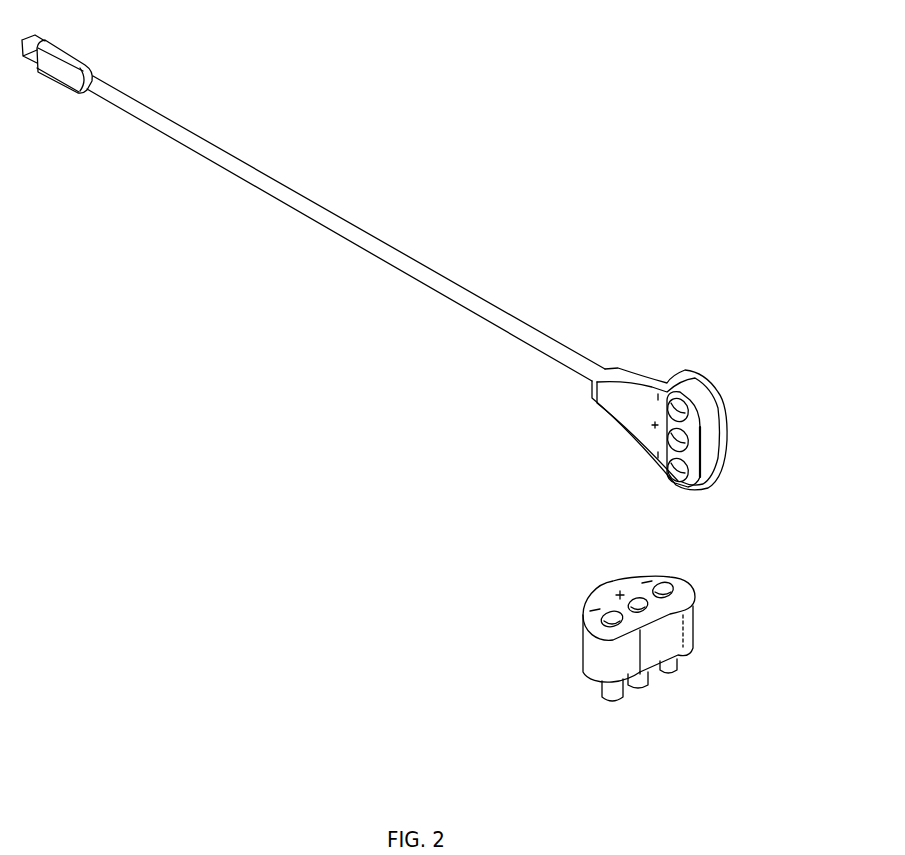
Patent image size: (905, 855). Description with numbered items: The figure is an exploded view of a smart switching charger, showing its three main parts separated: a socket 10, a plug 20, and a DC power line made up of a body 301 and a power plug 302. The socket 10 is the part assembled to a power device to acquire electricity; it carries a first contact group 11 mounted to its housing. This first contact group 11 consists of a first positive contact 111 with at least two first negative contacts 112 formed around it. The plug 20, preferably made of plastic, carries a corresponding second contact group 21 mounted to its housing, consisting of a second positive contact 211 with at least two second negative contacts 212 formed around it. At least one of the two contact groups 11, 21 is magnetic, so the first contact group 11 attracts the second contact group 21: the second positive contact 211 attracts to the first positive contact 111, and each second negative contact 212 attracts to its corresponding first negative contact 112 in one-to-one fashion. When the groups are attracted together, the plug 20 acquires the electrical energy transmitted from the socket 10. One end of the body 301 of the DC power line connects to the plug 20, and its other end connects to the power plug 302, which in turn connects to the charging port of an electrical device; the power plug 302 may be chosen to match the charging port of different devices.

The socket 10 is at (612, 604).
The first contact group 11 is at (602, 557).
The first positive contact 111 is at (639, 600).
The first negative contacts 112 is at (605, 616).
The plug 20 is at (710, 424).
The second contact group 21 is at (740, 448).
The second positive contact 211 is at (686, 457).
The second negative contacts 212 is at (686, 427).
The body 301 is at (363, 238).
The power plug 302 is at (62, 55).